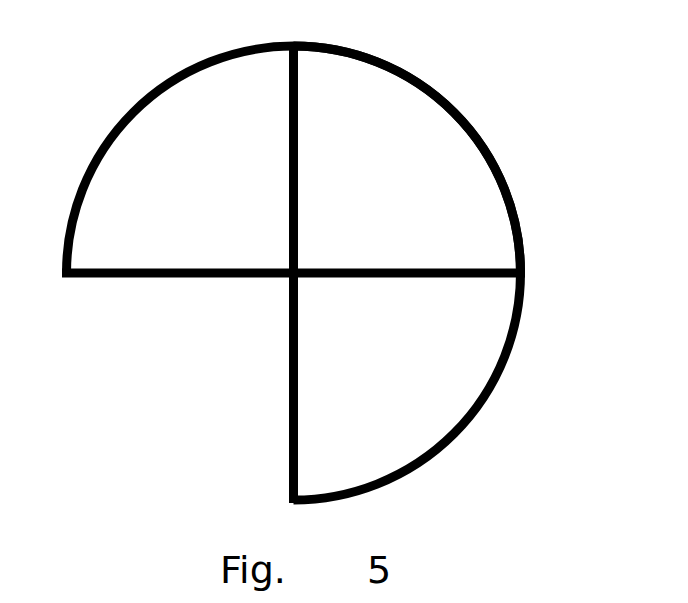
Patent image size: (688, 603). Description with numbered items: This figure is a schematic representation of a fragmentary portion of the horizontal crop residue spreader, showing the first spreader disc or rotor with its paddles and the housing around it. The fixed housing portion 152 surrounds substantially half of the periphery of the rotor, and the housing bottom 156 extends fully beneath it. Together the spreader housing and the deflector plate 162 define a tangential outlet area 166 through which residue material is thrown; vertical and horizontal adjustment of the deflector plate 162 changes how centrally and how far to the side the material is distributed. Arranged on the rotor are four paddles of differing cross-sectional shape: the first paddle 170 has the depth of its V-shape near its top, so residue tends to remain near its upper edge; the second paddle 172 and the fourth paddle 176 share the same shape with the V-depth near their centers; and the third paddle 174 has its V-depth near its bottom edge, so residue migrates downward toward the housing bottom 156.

The fixed housing portion 152 is at (362, 48).
The housing bottom 156 is at (408, 140).
The deflector plate 162 is at (481, 408).
The tangential outlet area 166 is at (162, 393).
The first paddle 170 is at (289, 175).
The second paddle 172 is at (433, 268).
The third paddle 174 is at (298, 400).
The fourth paddle 176 is at (149, 277).